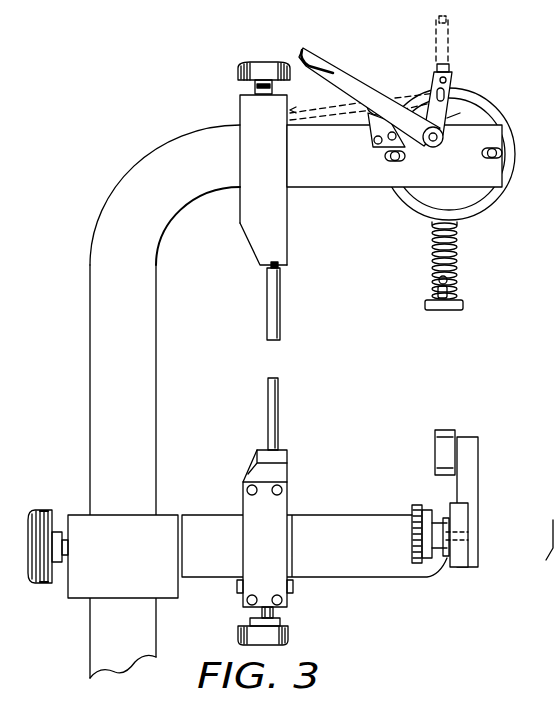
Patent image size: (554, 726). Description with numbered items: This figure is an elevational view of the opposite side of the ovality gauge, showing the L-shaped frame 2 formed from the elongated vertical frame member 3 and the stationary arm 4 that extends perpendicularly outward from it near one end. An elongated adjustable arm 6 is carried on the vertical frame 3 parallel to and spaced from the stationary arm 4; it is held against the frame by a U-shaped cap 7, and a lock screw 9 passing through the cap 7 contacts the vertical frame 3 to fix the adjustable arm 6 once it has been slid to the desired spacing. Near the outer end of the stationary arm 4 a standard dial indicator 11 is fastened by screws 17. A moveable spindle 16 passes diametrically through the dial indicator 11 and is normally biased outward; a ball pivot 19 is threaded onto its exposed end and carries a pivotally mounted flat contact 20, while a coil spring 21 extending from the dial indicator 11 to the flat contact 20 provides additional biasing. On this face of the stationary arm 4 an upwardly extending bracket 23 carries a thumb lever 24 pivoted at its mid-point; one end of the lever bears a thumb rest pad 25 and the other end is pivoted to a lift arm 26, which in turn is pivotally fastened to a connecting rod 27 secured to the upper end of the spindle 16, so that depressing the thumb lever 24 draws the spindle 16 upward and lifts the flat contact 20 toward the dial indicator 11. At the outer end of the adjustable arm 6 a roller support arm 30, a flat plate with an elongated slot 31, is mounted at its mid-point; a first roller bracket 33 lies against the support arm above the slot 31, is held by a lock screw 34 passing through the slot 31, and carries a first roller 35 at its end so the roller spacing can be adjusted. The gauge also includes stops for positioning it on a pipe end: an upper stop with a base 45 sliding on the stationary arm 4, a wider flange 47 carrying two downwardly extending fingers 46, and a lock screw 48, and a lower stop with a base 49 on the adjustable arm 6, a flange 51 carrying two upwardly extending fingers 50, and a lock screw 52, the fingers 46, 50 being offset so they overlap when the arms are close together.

The L-shaped frame 2 is at (152, 152).
The vertical frame member 3 is at (158, 305).
The stationary arm 4 is at (325, 188).
The adjustable arm 6 is at (358, 513).
The U-shaped cap 7 is at (78, 513).
The lock screw 9 is at (40, 583).
The dial indicator 11 is at (490, 97).
The moveable spindle 16 is at (448, 72).
The screws 17 is at (500, 152).
The ball pivot 19 is at (452, 290).
The flat contact 20 is at (463, 306).
The coil spring 21 is at (458, 226).
The bracket 23 is at (368, 133).
The thumb lever 24 is at (357, 82).
The thumb rest pad 25 is at (318, 60).
The lift arm 26 is at (447, 118).
The connecting rod 27 is at (452, 85).
The roller support arm 30 is at (465, 567).
The elongated slot 31 is at (536, 524).
The first roller bracket 33 is at (473, 437).
The lock screw 34 is at (412, 533).
The first roller 35 is at (435, 437).
The base 45 is at (240, 152).
The fingers 46 is at (281, 285).
The flange 47 is at (250, 242).
The lock screw 48 is at (258, 62).
The base 49 is at (255, 540).
The fingers 50 is at (268, 405).
The flange 51 is at (250, 458).
The lock screw 52 is at (290, 635).